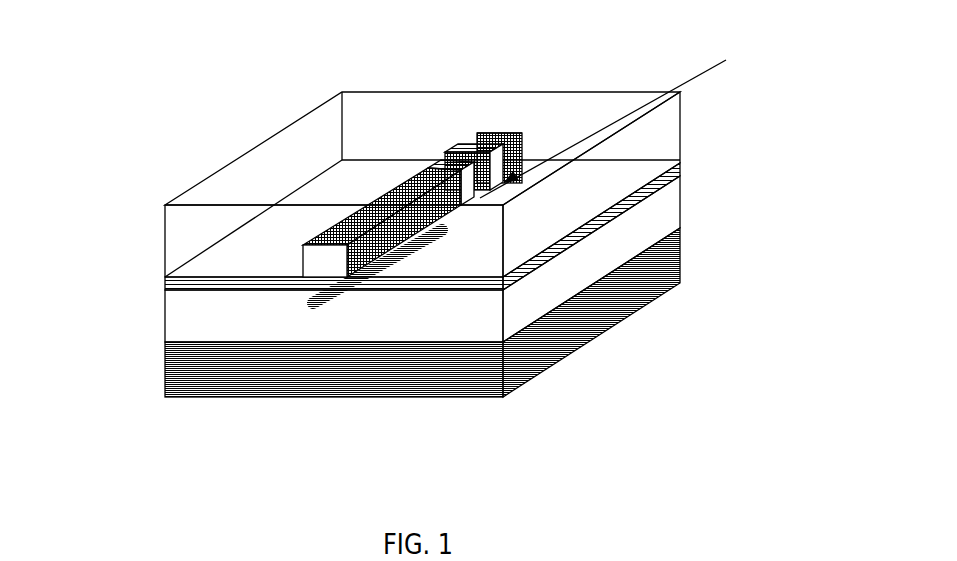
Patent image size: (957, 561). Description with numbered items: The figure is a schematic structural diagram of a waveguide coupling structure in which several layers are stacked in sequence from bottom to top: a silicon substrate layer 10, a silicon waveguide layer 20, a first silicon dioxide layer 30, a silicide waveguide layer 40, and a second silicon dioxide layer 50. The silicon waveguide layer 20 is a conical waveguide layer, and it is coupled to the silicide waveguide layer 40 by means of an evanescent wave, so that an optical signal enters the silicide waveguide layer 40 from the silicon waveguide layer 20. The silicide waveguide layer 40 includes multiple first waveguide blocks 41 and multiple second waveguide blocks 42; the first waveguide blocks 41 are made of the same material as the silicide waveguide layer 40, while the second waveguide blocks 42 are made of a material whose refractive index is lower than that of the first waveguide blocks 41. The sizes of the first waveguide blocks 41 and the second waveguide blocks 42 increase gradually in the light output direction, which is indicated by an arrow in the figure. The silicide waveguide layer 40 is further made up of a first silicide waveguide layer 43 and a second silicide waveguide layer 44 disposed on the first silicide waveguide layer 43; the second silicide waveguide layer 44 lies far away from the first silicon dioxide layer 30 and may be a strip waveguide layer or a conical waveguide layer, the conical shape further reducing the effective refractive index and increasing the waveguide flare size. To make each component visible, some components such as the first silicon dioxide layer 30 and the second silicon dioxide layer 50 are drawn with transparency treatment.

The silicon substrate layer 10 is at (680, 265).
The silicon waveguide layer 20 is at (313, 303).
The first silicon dioxide layer 30 is at (507, 284).
The silicide waveguide layer 40 is at (165, 279).
The first waveguide blocks 41 is at (521, 133).
The second waveguide blocks 42 is at (499, 133).
The first silicide waveguide layer 43 is at (488, 293).
The second silicide waveguide layer 44 is at (303, 251).
The second silicon dioxide layer 50 is at (625, 121).